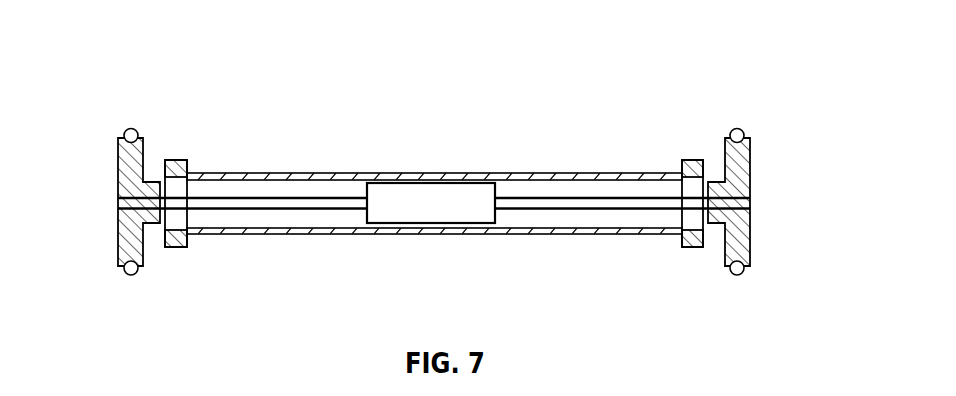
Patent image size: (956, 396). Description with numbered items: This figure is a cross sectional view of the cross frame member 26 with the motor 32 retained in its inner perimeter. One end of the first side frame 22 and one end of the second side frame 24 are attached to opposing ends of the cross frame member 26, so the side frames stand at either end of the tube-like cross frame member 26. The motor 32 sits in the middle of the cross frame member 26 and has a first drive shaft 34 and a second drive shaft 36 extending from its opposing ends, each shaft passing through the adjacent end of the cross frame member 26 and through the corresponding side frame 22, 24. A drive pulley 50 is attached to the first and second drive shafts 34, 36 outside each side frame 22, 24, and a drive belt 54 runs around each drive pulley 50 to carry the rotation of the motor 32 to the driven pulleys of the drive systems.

The first side frame 22 is at (688, 160).
The second side frame 24 is at (175, 160).
The cross frame member 26 is at (263, 233).
The motor 32 is at (452, 209).
The first drive shaft 34 is at (547, 198).
The second drive shaft 36 is at (275, 198).
The drive pulley 50 is at (118, 247).
The drive belt 54 is at (132, 275).